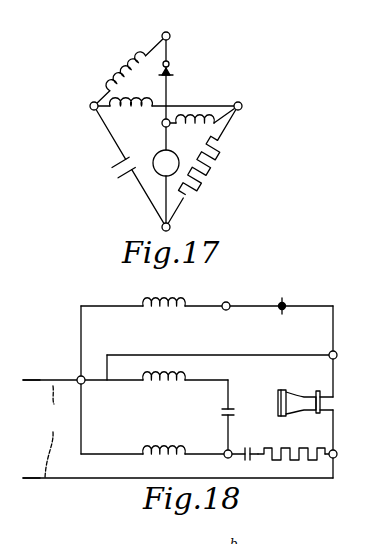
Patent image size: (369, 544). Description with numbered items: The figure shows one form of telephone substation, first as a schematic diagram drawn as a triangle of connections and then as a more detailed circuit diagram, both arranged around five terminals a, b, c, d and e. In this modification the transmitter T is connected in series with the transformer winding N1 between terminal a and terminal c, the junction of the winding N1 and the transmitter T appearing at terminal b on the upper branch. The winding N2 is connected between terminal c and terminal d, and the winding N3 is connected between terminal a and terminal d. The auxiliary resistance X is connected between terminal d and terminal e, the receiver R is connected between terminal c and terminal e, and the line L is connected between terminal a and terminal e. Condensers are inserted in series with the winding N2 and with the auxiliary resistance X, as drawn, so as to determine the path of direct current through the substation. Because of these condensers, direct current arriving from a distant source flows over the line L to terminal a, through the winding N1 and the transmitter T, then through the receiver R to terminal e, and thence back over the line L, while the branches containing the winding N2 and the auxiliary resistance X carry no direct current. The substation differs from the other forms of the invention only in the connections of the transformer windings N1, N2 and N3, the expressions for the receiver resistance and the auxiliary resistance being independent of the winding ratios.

In FIG. 17, the terminal a is at (88, 107).
In FIG. 18, the terminal a is at (75, 371).
In FIG. 17, the terminal b is at (172, 25).
In FIG. 18, the terminal b is at (227, 294).
In FIG. 17, the terminal c is at (160, 125).
In FIG. 18, the terminal c is at (338, 356).
In FIG. 17, the terminal d is at (245, 105).
In FIG. 18, the terminal d is at (225, 461).
In FIG. 17, the terminal e is at (173, 229).
In FIG. 18, the terminal e is at (339, 455).
In FIG. 17, the receiver R is at (166, 163).
In FIG. 18, the receiver R is at (304, 392).
In FIG. 17, the transmitter T is at (166, 68).
In FIG. 18, the transmitter T is at (292, 292).
In FIG. 18, the winding N1 is at (164, 317).
In FIG. 18, the winding N2 is at (164, 391).
In FIG. 18, the winding N3 is at (164, 442).
In FIG. 18, the auxiliary resistance X is at (300, 432).
In FIG. 18, the line L is at (38, 429).